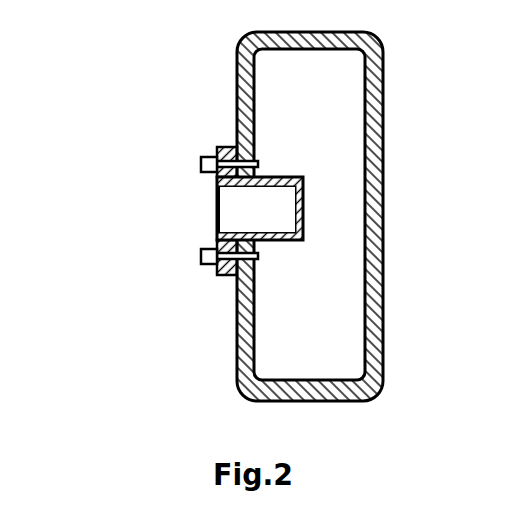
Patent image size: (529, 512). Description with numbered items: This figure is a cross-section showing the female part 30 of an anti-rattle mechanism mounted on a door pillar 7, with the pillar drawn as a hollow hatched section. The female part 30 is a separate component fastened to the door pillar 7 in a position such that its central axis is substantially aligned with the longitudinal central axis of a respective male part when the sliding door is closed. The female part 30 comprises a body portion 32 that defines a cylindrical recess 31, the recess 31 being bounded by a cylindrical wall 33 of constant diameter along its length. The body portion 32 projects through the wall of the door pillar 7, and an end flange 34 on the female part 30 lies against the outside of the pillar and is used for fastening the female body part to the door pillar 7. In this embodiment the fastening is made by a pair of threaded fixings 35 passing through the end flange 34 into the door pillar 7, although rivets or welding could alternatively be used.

The door pillar 7 is at (236, 103).
The female part 30 is at (346, 190).
The cylindrical recess 31 is at (278, 223).
The body portion 32 is at (303, 198).
The cylindrical wall 33 is at (139, 216).
The end flange 34 is at (225, 273).
The threaded fixings 35 is at (200, 165).